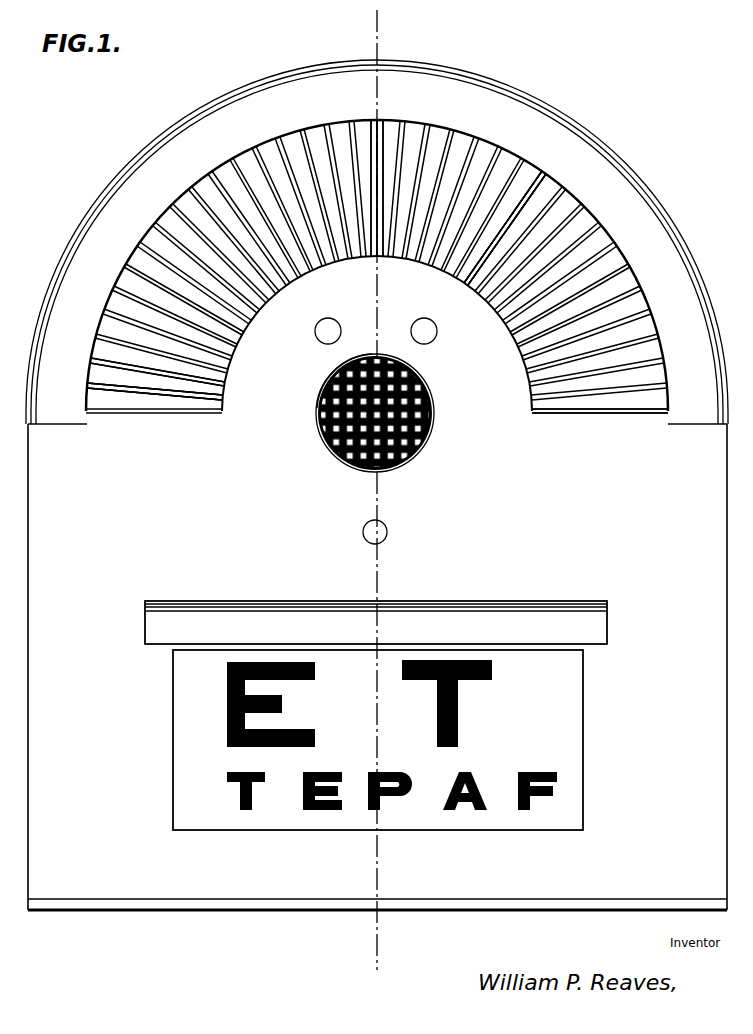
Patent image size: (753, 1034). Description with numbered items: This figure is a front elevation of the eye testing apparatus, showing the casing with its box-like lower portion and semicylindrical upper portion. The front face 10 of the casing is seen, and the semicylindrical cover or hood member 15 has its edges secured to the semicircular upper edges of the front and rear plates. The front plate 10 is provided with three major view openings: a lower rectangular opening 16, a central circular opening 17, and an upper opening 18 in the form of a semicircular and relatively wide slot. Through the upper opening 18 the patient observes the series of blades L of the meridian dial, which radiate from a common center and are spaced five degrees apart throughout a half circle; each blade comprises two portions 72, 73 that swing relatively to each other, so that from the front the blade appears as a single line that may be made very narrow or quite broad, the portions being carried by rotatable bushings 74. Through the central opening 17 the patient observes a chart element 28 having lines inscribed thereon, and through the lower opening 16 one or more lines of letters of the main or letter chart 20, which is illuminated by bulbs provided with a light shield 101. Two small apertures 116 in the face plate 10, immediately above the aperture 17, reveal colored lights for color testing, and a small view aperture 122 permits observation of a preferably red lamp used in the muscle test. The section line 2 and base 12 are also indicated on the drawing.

The section line 2- 2 is at (358, 28).
The front face 10 is at (377, 667).
The base 12 is at (233, 904).
The semicylindrical cover or hood member 15 is at (645, 188).
The lower rectangular opening 16 is at (173, 722).
The central circular opening 17 is at (340, 449).
The upper opening 18 is at (437, 272).
The main or letter chart 20 is at (557, 717).
The chart element 28 is at (423, 380).
The blade portion 72 is at (481, 303).
The blade portion 73 is at (365, 247).
The bushing 74 is at (533, 403).
The light shield 101 is at (360, 604).
The small apertures 116 is at (411, 331).
The small view aperture 122 is at (363, 532).
The blades L is at (510, 150).